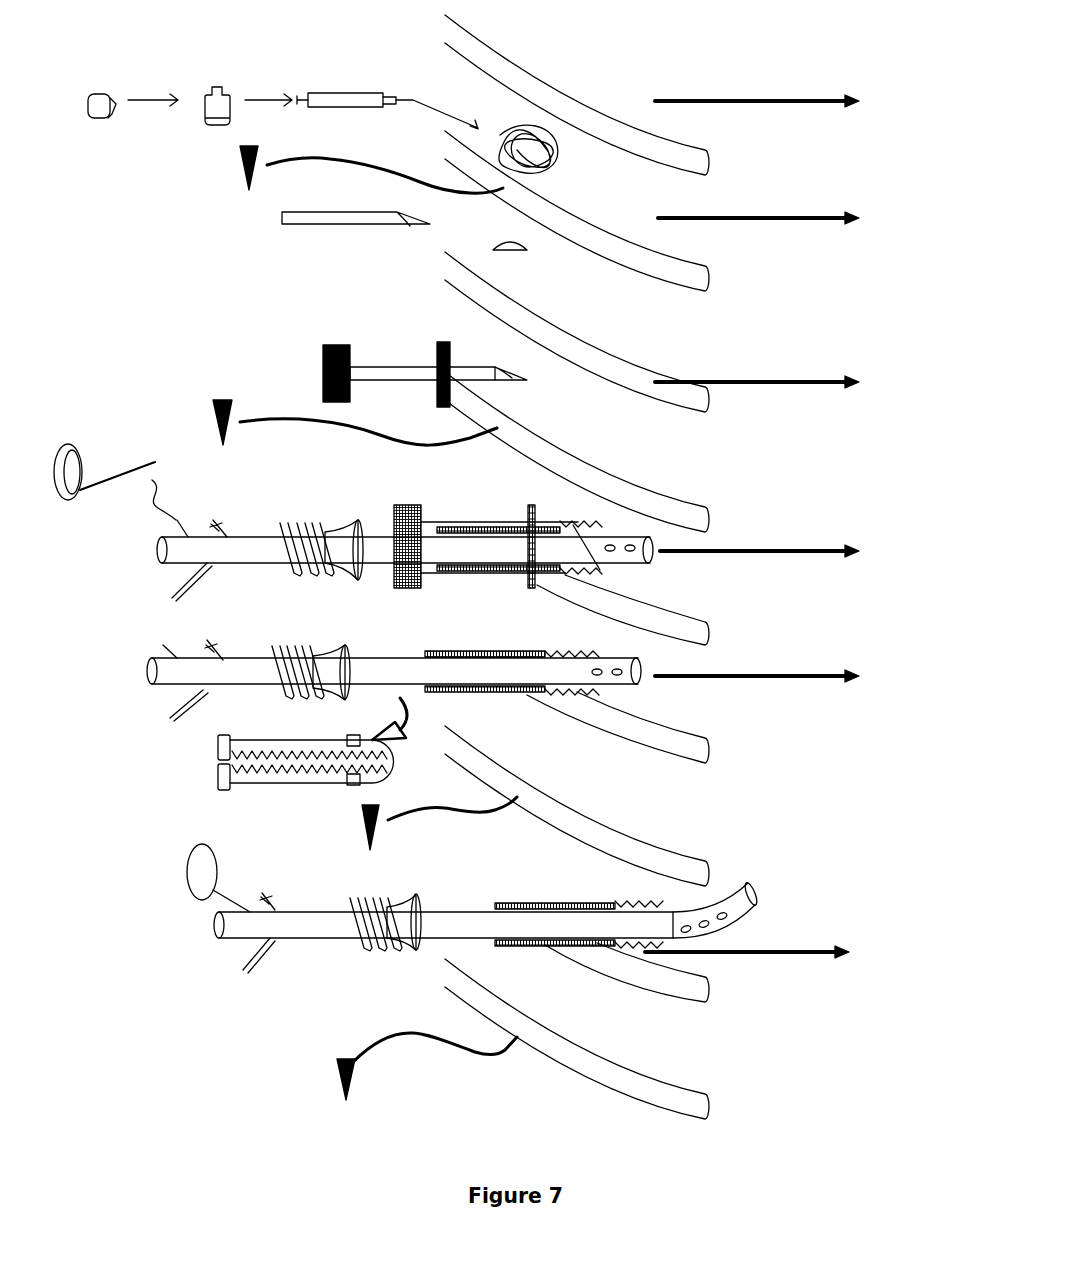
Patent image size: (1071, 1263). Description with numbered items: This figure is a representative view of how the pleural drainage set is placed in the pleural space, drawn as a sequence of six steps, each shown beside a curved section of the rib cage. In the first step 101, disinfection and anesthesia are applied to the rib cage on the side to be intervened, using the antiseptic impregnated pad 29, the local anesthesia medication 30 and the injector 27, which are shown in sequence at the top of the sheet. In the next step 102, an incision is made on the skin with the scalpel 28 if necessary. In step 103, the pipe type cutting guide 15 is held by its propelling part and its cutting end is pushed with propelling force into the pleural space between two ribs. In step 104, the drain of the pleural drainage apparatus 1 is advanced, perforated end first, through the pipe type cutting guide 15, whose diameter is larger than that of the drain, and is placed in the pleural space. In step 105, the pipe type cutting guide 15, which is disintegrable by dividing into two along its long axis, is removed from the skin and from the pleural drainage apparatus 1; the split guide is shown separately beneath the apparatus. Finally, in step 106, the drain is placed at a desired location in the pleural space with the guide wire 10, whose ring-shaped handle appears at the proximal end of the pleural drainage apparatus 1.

The pleural drainage apparatus 1 is at (388, 655).
The guide wire 10 is at (83, 458).
The pipe type cutting guide 15 is at (387, 367).
The injector 27 is at (347, 93).
The scalpel 28 is at (290, 212).
The antiseptic impregnated pad 29 is at (110, 98).
The local anesthesia medication 30 is at (222, 90).
The disinfection and anesthesia step 101 is at (784, 101).
The skin incision step 102 is at (788, 217).
The cutting guide placement step 103 is at (784, 381).
The drain advancement step 104 is at (786, 550).
The cutting guide removal step 105 is at (785, 675).
The drain positioning step 106 is at (779, 948).